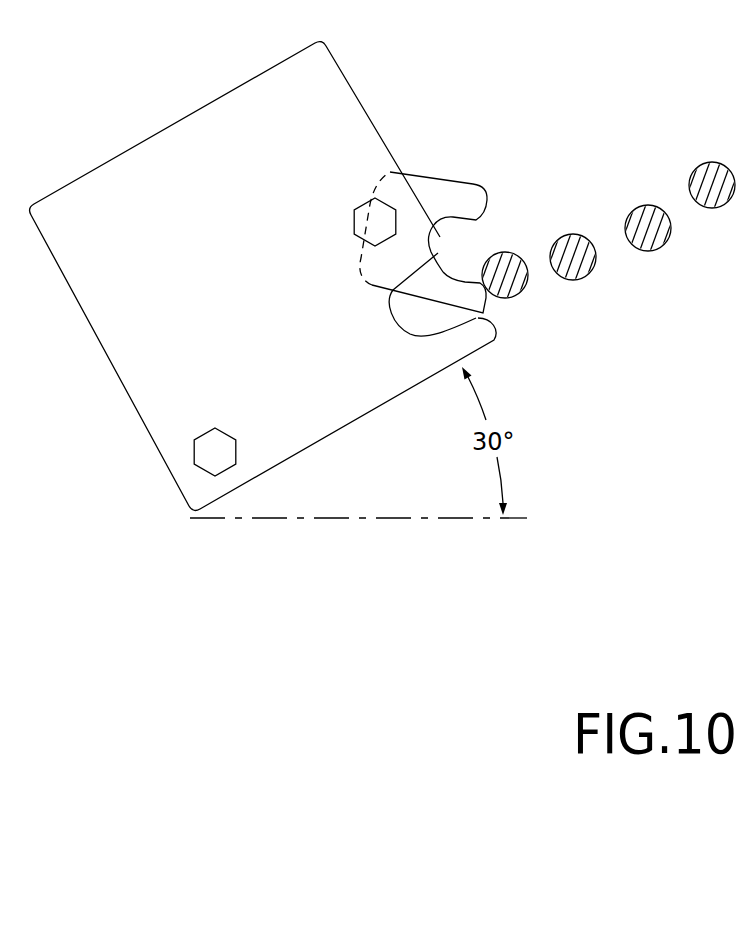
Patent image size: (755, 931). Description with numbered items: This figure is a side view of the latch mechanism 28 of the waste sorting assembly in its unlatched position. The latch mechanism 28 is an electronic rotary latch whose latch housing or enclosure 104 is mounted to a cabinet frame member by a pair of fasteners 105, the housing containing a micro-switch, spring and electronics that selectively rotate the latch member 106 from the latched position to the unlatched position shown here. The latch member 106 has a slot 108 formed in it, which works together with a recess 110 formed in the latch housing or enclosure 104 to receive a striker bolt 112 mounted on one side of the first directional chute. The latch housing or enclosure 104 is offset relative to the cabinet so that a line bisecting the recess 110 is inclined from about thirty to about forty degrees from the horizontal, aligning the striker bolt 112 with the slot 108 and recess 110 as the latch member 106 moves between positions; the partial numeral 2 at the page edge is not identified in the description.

The partially visible reference (page edge) 2 is at (15, 329).
The latch mechanism 28 is at (125, 530).
The latch housing or enclosure 104 is at (108, 362).
The fasteners 105 is at (370, 215).
The latch member 106 is at (462, 198).
The slot 108 is at (487, 233).
The recess 110 is at (406, 316).
The striker bolt 112 is at (710, 202).